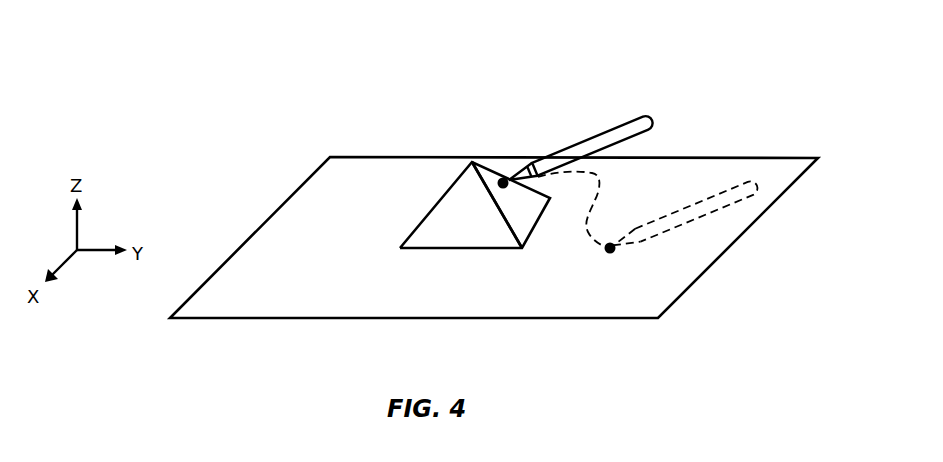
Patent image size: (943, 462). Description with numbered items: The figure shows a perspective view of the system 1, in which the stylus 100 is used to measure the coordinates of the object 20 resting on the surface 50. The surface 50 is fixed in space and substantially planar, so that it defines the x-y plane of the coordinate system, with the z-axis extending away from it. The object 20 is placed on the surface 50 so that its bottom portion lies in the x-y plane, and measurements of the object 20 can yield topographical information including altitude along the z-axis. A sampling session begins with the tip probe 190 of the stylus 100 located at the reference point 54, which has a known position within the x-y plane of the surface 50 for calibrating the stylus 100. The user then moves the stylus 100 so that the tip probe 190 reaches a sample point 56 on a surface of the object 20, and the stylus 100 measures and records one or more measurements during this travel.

The system 1 is at (399, 76).
The object 20 is at (433, 208).
The surface 50 is at (697, 245).
The reference point 54 is at (613, 258).
The sample point 56 is at (508, 190).
The stylus 100 is at (592, 134).
The tip probe 190 is at (505, 179).